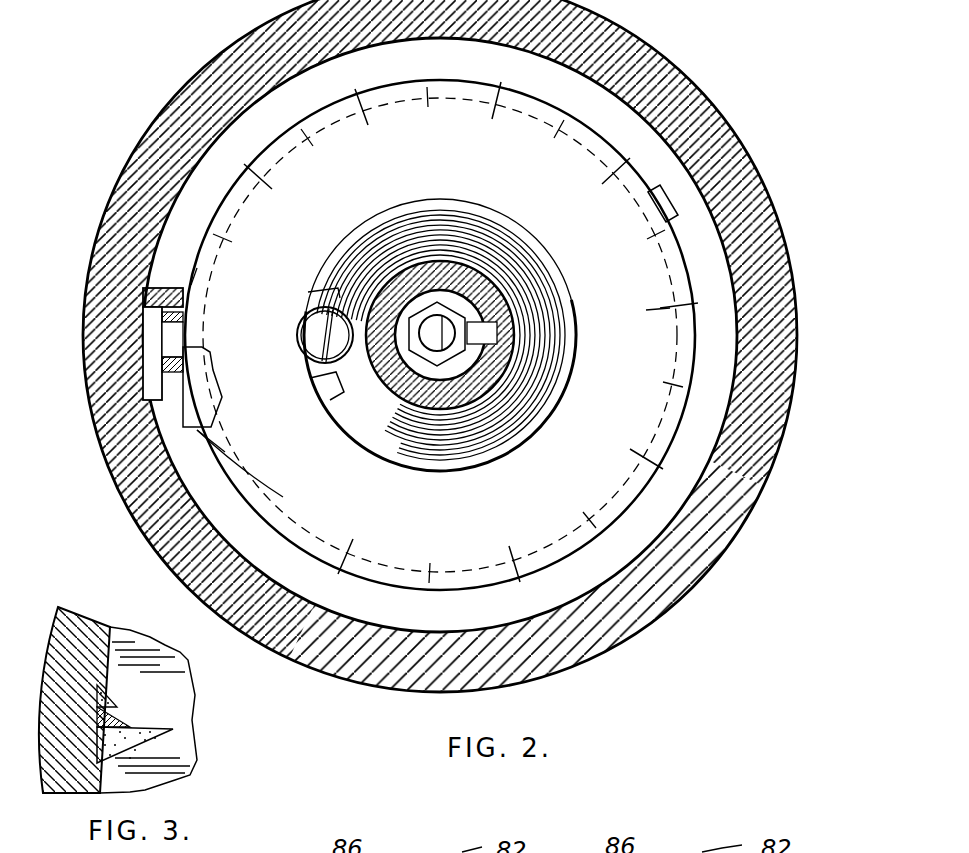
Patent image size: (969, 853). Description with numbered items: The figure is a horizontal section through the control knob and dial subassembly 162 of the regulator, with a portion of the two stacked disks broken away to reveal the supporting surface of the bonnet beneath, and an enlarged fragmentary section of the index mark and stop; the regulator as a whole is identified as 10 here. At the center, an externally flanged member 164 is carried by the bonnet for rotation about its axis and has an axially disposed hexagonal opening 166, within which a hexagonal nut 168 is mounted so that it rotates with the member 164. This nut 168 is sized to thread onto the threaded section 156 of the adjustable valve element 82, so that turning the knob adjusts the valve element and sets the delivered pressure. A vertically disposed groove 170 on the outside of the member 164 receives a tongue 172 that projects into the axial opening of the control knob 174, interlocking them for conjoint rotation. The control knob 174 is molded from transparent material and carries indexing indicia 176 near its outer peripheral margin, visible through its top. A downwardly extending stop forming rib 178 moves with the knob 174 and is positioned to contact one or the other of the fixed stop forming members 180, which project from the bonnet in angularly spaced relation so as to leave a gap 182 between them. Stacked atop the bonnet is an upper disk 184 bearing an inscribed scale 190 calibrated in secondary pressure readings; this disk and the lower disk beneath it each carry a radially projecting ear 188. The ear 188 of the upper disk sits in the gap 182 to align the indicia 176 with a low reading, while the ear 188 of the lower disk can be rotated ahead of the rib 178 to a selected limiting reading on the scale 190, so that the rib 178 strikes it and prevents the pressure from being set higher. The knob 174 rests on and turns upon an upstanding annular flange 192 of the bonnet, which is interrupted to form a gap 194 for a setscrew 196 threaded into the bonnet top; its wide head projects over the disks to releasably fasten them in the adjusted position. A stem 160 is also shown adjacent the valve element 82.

In FIG. 2, the dial indicator 10 is at (188, 297).
In FIG. 2, the control knob and dial subassembly 162 is at (760, 104).
In FIG. 2, the control knob 174 is at (793, 321).
In FIG. 3, the control knob 174 is at (90, 584).
In FIG. 2, the ear 188 is at (669, 203).
In FIG. 2, the stop forming rib 178 is at (166, 280).
In FIG. 3, the stop forming rib 178 is at (100, 717).
In FIG. 2, the fixed stop forming members 180 is at (187, 297).
In FIG. 2, the gap 182 is at (175, 331).
In FIG. 2, the scale 190 is at (470, 142).
In FIG. 2, the annular flange 192 is at (442, 207).
In FIG. 2, the upper disk 184 is at (287, 497).
In FIG. 2, the threaded section 156 is at (403, 300).
In FIG. 2, the groove 170 is at (390, 333).
In FIG. 2, the setscrew 196 is at (307, 342).
In FIG. 2, the gap 194 is at (320, 380).
In FIG. 2, the tongue 172 is at (333, 420).
In FIG. 2, the hexagonal nut 168 is at (400, 392).
In FIG. 2, the externally flanged member 164 is at (500, 420).
In FIG. 2, the hexagonal opening 166 is at (458, 362).
In FIG. 2, the stem 160 is at (472, 320).
In FIG. 2, the valve element 82 is at (478, 342).
In FIG. 3, the indexing indicia 176 is at (147, 717).